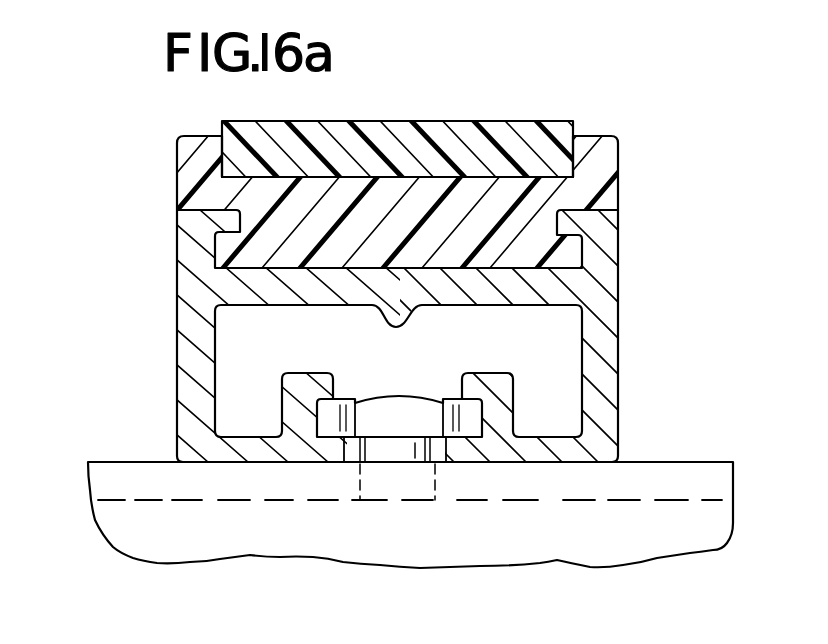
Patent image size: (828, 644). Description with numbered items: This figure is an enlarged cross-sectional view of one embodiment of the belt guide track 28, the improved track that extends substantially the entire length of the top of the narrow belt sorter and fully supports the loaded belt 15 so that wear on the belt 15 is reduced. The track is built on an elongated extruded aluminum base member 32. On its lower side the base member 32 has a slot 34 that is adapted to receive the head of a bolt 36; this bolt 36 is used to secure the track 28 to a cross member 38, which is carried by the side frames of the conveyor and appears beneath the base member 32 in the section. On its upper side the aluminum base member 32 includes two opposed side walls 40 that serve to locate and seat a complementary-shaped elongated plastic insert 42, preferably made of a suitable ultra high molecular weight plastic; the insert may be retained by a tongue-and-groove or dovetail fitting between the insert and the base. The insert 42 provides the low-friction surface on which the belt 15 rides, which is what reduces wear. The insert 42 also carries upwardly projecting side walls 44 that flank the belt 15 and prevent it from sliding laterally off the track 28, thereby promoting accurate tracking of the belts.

The belt 15 is at (531, 128).
The belt guide track 28 is at (152, 285).
The base member 32 is at (615, 375).
The slot 34 is at (320, 410).
The bolt 36 is at (400, 403).
The cross member 38 is at (530, 537).
The side walls 40 is at (195, 239).
The plastic insert 42 is at (417, 231).
The side walls 44 is at (188, 165).